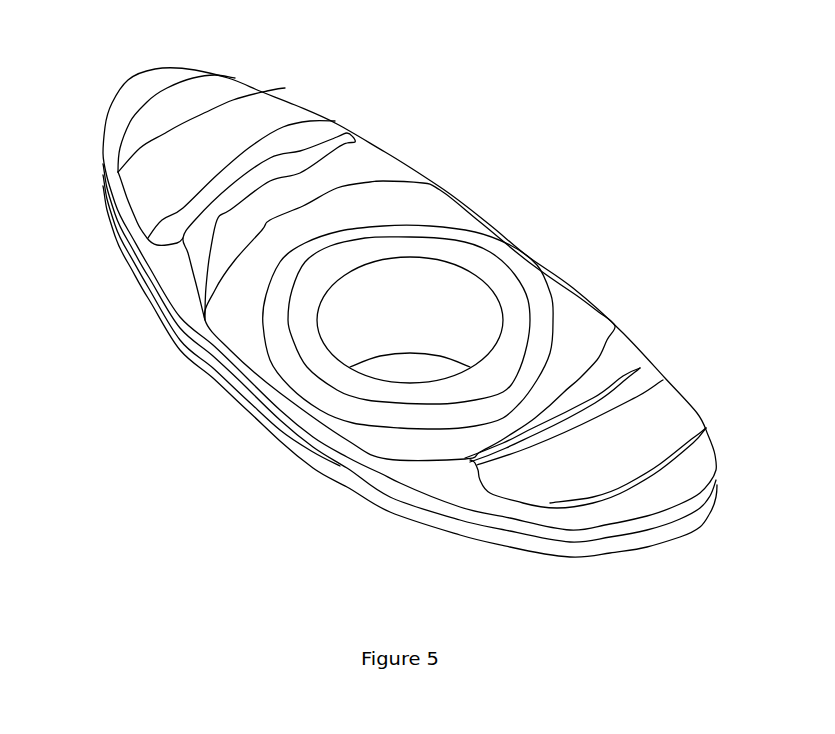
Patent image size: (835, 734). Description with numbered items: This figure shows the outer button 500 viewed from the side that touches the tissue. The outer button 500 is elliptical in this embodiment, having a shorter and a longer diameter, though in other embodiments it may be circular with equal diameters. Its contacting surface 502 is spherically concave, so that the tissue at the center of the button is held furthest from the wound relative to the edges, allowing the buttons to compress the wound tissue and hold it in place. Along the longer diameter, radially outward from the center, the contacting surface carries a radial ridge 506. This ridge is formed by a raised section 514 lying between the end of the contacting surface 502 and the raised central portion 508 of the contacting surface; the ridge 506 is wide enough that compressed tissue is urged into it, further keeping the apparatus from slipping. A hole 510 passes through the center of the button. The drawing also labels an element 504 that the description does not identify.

The outer button 500 is at (429, 287).
The contacting surface 502 is at (157, 67).
The end groove 504 is at (312, 136).
The radial ridge 506 is at (384, 176).
The raised central portion of the contacting surface 508 is at (570, 303).
The hole through the center 510 is at (453, 283).
The raised section 514 is at (386, 168).